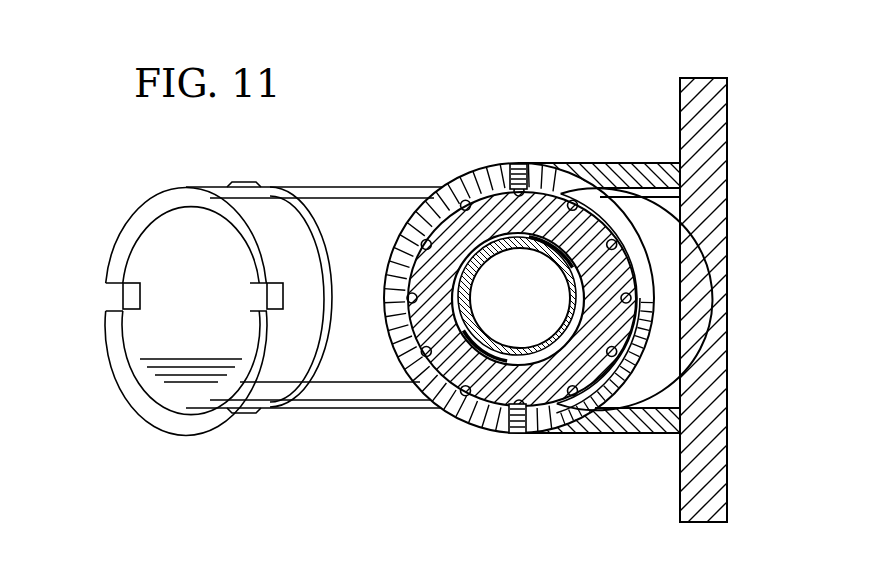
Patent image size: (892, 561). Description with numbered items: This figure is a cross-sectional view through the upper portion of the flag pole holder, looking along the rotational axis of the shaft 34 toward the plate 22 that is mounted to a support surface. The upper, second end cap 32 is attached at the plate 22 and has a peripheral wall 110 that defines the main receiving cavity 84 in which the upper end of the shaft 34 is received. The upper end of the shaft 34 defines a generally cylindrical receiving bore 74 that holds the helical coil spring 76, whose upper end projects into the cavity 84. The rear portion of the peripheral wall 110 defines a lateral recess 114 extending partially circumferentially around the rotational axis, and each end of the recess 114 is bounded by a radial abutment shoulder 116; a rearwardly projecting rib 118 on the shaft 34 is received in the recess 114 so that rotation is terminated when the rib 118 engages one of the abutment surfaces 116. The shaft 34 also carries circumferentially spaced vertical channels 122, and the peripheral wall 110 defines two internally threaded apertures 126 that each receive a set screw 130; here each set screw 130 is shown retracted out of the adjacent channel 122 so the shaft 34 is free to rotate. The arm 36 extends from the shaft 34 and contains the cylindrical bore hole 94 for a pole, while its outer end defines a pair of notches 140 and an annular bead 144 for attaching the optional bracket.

The plate 22 is at (704, 72).
The second end cap 32 is at (651, 160).
The shaft 34 is at (413, 328).
The arm 36 is at (347, 193).
The receiving bore 74 is at (530, 357).
The helical coil spring 76 is at (487, 267).
The cylindrical hole 84 is at (502, 183).
The bore hole 94 is at (148, 248).
The peripheral wall 110 is at (470, 174).
The lateral recess 114 is at (640, 339).
The radial abutment shoulder 116 is at (549, 186).
The rib 118 is at (655, 292).
The vertical channels 122 is at (616, 240).
The apertures 126 is at (514, 163).
The set screw 130 is at (524, 162).
The notches 140 is at (262, 300).
The annular bead 144 is at (250, 182).